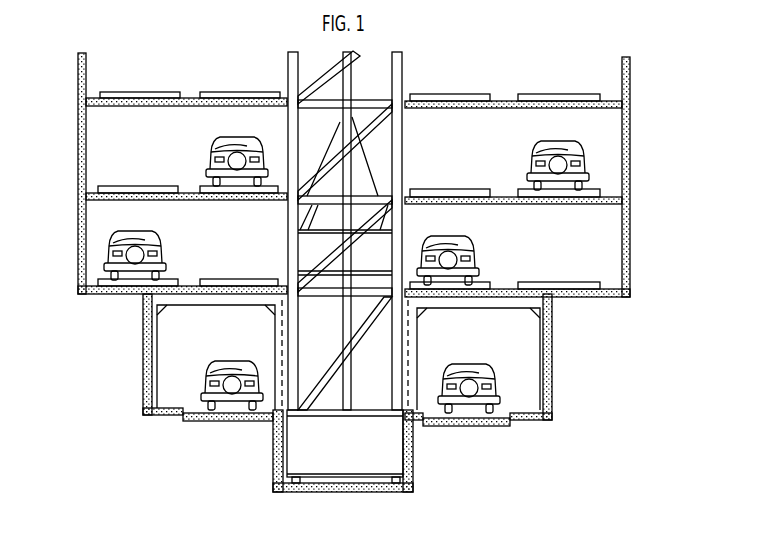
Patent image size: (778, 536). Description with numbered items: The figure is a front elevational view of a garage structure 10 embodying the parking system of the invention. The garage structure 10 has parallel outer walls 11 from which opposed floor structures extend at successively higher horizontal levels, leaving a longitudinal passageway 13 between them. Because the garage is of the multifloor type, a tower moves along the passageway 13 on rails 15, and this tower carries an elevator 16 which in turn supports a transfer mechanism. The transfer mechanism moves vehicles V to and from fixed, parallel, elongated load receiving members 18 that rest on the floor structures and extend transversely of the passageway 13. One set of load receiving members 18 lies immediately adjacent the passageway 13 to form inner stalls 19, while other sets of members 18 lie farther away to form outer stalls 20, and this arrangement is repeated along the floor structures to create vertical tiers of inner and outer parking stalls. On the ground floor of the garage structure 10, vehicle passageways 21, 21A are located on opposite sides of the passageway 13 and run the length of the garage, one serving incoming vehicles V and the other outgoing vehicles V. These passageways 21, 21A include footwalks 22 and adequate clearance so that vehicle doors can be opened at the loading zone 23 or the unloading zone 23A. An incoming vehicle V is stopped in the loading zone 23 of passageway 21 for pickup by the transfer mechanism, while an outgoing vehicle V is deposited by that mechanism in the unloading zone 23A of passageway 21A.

The garage structure 10 is at (130, 313).
The outer walls 11 is at (78, 221).
The longitudinal passageway 13 is at (345, 490).
The rails 15 is at (292, 488).
The elevator 16 is at (313, 164).
The load receiving members 18 is at (212, 280).
The inner stalls 19 is at (474, 87).
The outer stalls 20 is at (534, 87).
The vehicle passageway 21 is at (478, 349).
The vehicle passageway 21A is at (242, 344).
The footwalks 22 is at (527, 422).
The loading zone 23 is at (486, 426).
The unloading zone 23A is at (228, 422).
The vehicles V is at (154, 242).